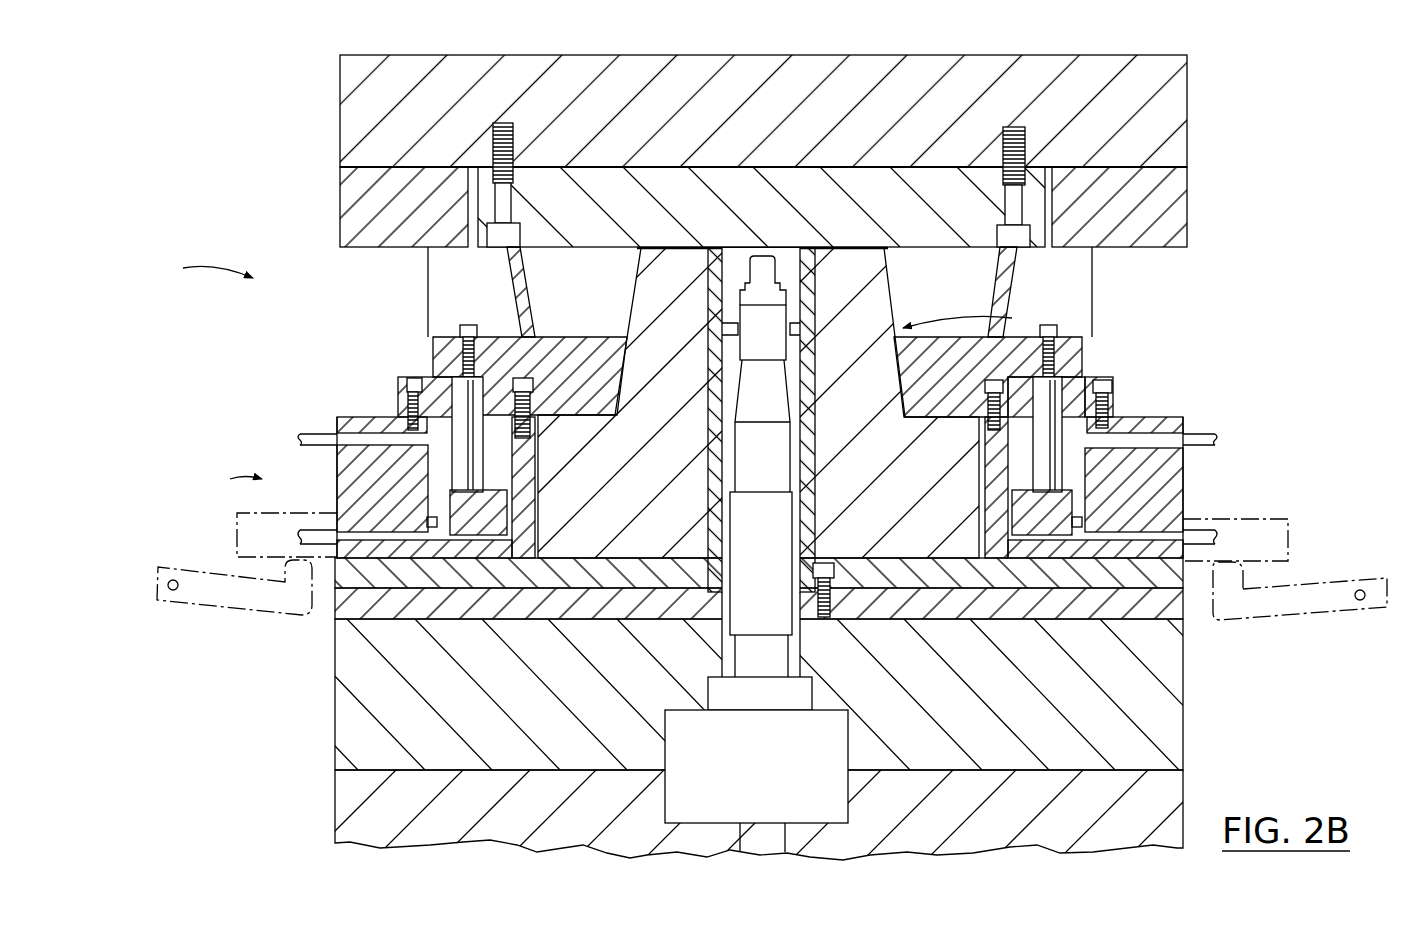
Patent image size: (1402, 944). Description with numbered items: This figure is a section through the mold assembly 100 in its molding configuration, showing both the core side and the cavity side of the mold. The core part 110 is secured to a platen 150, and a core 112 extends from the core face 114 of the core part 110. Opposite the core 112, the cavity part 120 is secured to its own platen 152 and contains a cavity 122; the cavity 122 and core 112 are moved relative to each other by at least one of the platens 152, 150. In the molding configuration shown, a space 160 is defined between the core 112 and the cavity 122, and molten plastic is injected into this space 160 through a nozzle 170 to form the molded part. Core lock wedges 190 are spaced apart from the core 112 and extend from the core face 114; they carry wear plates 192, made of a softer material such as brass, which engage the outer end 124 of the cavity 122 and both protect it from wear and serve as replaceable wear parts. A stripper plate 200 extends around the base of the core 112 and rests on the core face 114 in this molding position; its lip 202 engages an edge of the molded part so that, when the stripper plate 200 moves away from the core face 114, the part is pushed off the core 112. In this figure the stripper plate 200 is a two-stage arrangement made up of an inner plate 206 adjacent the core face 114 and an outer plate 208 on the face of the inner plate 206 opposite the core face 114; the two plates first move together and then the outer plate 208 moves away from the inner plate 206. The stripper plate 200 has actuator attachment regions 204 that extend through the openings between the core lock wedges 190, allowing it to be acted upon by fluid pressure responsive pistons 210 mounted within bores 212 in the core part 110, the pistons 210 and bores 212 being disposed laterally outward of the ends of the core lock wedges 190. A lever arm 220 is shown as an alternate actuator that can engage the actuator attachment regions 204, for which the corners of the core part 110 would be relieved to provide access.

The mold assembly 100 is at (196, 268).
The core part 110 is at (222, 476).
The core 112 is at (635, 478).
The core face 114 is at (352, 418).
The cavity part 120 is at (352, 204).
The cavity 122 is at (870, 209).
The outer end of the cavity 124 is at (548, 288).
The platen 150 is at (365, 698).
The platen 152 is at (1188, 112).
The space 160 is at (723, 248).
The nozzle 170 is at (744, 341).
The core lock wedges 190 is at (428, 259).
The wear plates 192 is at (516, 272).
The stripper plate 200 is at (340, 333).
The lip 202 is at (979, 313).
The actuator attachment regions 204 is at (1108, 398).
The inner plate 206 is at (405, 400).
The outer plate 208 is at (443, 346).
The pistons 210 is at (455, 515).
The bores 212 is at (430, 455).
The lever arm 220 is at (207, 596).